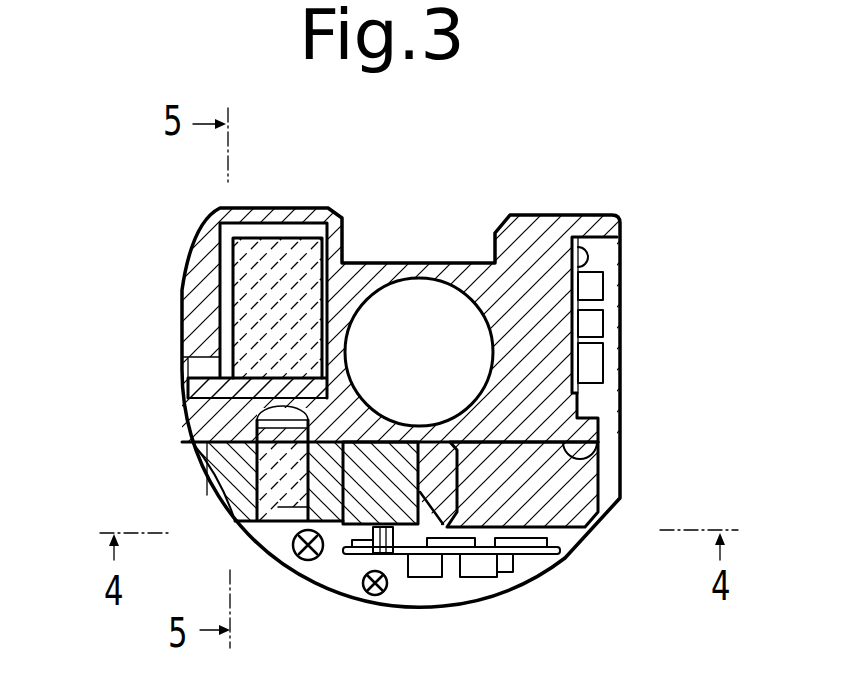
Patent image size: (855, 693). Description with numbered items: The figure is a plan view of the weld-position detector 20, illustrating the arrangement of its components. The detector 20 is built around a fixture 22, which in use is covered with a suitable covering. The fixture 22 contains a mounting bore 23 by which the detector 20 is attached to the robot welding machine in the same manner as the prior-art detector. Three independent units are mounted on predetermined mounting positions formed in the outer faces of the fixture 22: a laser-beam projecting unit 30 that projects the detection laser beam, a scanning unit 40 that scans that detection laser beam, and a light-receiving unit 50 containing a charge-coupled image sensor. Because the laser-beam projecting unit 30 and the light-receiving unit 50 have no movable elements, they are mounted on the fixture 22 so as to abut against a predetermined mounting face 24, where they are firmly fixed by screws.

The weld-position detector 20 is at (601, 203).
The fixture 22 is at (540, 230).
The mounting bore 23 is at (433, 283).
The mounting face 24 is at (192, 463).
The laser-beam projecting unit 30 is at (358, 508).
The scanning unit 40 is at (226, 276).
The light-receiving unit 50 is at (596, 484).